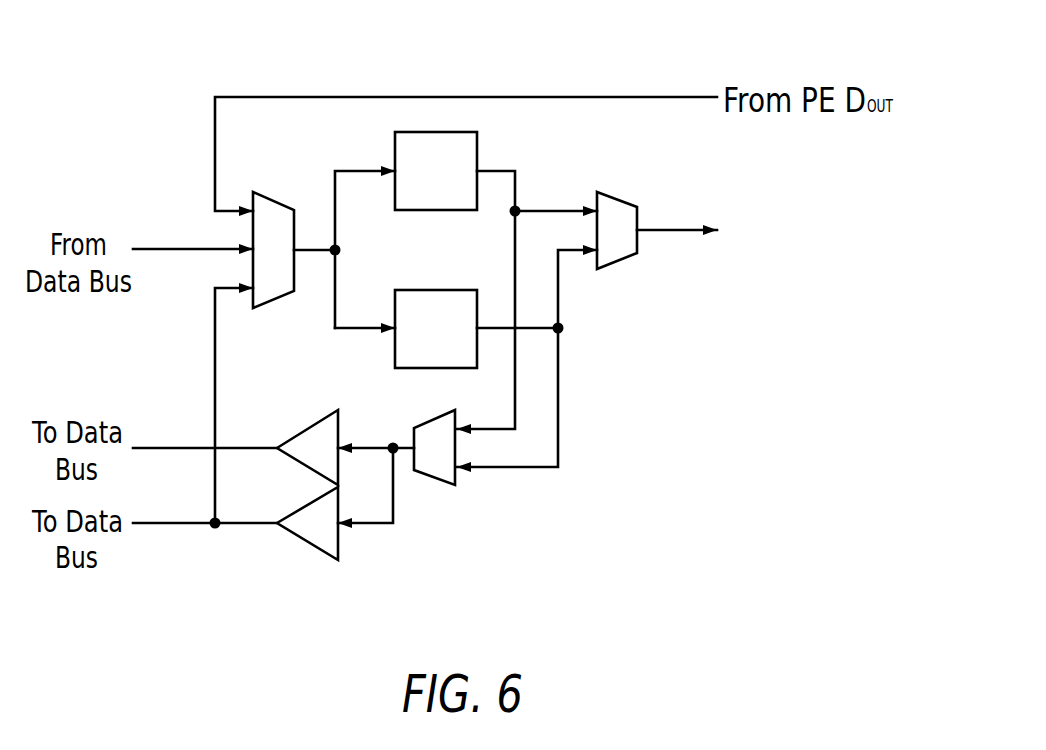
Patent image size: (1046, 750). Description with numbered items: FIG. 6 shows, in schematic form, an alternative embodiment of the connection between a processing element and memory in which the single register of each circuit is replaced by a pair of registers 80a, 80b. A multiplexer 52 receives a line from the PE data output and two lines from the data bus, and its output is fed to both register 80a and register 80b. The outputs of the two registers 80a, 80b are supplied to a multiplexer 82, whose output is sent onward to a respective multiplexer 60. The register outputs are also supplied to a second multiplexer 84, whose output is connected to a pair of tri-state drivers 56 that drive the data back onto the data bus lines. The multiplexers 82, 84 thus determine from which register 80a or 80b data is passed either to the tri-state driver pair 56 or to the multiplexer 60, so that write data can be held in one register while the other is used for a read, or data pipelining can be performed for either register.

The multiplexer 52 is at (283, 200).
The register 80a is at (477, 146).
The register 80b is at (413, 290).
The multiplexer 82 is at (622, 262).
The second multiplexer 84 is at (432, 481).
The tri-state drivers 56 is at (318, 549).
The multiplexer 60 is at (778, 231).